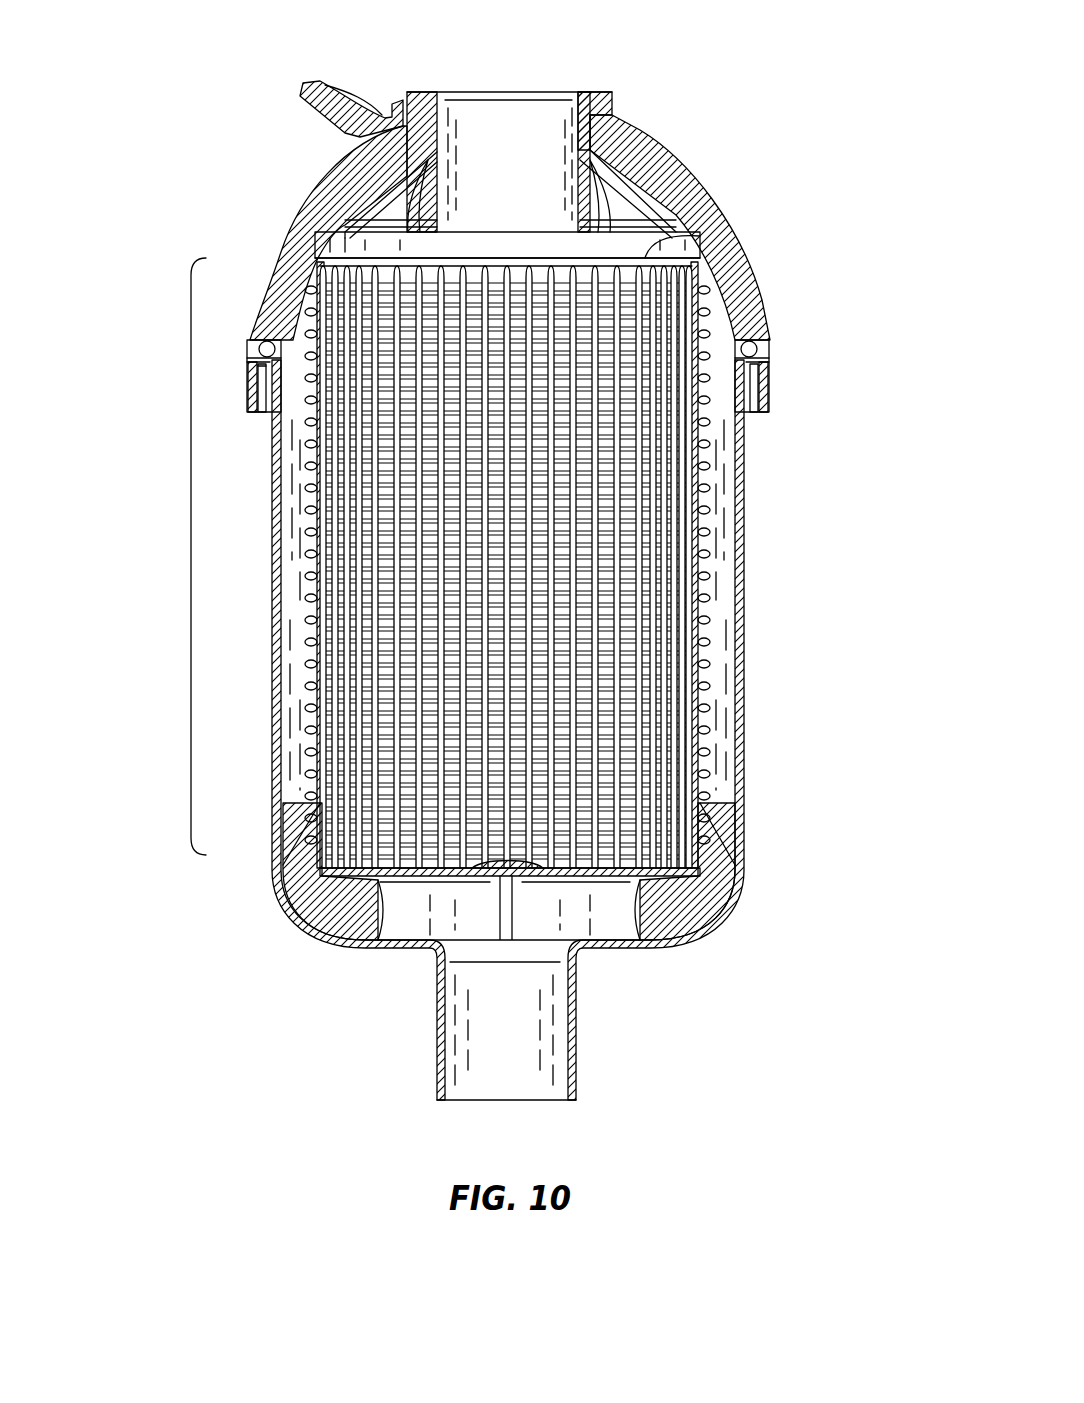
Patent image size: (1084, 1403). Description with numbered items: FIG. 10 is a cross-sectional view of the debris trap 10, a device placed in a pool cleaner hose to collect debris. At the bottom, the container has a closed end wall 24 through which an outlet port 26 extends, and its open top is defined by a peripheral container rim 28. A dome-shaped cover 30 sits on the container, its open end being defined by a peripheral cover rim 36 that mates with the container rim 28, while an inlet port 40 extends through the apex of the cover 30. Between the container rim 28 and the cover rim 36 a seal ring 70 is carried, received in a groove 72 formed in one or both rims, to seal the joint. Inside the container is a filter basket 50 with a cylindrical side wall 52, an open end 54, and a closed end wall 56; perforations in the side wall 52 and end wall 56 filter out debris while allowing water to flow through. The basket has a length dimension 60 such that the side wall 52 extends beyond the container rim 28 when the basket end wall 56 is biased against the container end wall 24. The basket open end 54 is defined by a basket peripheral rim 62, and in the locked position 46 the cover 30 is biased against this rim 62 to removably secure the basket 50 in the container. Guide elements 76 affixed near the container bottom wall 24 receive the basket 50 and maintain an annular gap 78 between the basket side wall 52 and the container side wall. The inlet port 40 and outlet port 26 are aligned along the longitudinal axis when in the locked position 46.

The debris trap 10 is at (727, 104).
The closed end wall 24 is at (660, 873).
The outlet port 26 is at (440, 1056).
The peripheral container rim 28 is at (770, 360).
The cover 30 is at (318, 186).
The peripheral cover rim 36 is at (256, 370).
The inlet port 40 is at (556, 106).
The locked position 46 is at (206, 178).
The filter basket 50 is at (700, 491).
The cylindrical side wall 52 is at (703, 618).
The open end 54 is at (648, 248).
The closed end wall 56 is at (660, 872).
The length dimension 60 is at (191, 557).
The basket peripheral rim 62 is at (702, 258).
The seal ring 70 is at (754, 345).
The groove 72 is at (256, 347).
The guide elements 76 is at (333, 905).
The annular gap 78 is at (706, 720).